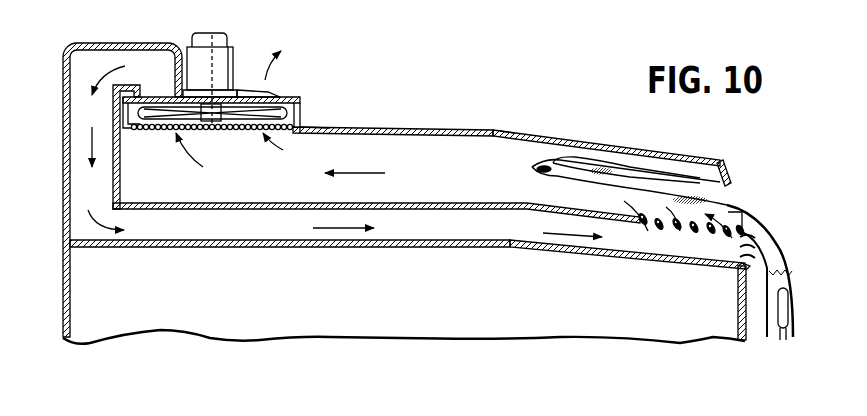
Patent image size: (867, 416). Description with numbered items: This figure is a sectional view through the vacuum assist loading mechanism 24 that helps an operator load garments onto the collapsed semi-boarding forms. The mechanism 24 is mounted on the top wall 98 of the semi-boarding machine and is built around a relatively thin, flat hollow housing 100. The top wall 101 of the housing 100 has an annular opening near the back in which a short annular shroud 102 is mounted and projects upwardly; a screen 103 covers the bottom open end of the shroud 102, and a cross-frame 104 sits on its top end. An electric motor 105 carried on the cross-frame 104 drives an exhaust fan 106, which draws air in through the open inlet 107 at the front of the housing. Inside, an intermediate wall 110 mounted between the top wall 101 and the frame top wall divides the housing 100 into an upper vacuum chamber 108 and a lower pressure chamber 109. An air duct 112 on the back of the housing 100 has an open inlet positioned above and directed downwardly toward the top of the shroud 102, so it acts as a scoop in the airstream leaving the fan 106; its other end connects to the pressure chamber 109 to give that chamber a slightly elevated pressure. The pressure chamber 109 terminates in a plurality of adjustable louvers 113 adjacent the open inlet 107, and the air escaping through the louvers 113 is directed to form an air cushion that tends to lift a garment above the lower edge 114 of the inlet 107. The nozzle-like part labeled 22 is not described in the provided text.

The air duct 112 is at (149, 57).
The electric motor 105 is at (233, 50).
The cross-frame 104 is at (273, 97).
The annular shroud 102 is at (300, 115).
The exhaust fan 106 is at (155, 113).
The screen 103 is at (228, 128).
The vacuum assist loading mechanism 24 is at (445, 86).
The top wall 101 is at (448, 127).
The upper vacuum chamber 108 is at (507, 140).
The housing 100 is at (558, 126).
The open inlet 107 is at (728, 178).
The intermediate wall 110 is at (385, 203).
The top wall 98 is at (430, 248).
The lower pressure chamber 109 is at (515, 228).
The adjustable louvers 113 is at (740, 257).
The lower edge 114 is at (752, 298).
The outlet nozzle 22 is at (784, 262).